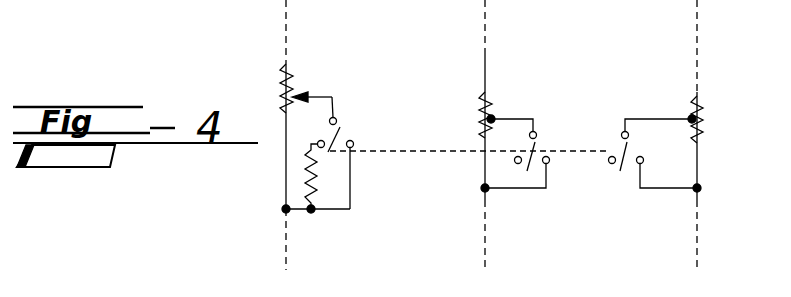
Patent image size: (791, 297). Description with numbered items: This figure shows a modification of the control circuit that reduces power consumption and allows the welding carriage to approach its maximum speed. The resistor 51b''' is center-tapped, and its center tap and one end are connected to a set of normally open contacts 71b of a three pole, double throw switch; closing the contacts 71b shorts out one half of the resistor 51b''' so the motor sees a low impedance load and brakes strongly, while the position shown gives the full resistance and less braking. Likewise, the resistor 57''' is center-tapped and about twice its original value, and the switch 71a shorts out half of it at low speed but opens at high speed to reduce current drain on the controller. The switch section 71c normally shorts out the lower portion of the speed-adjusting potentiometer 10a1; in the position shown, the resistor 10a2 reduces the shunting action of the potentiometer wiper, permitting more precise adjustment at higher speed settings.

The potentiometer 10a1 is at (290, 79).
The resistor 10a2 is at (318, 186).
The switch section 71c is at (343, 117).
The normally open contacts 71b is at (541, 147).
The switch 71a is at (629, 154).
The resistor 51b''' is at (451, 115).
The resistor 57''' is at (713, 119).